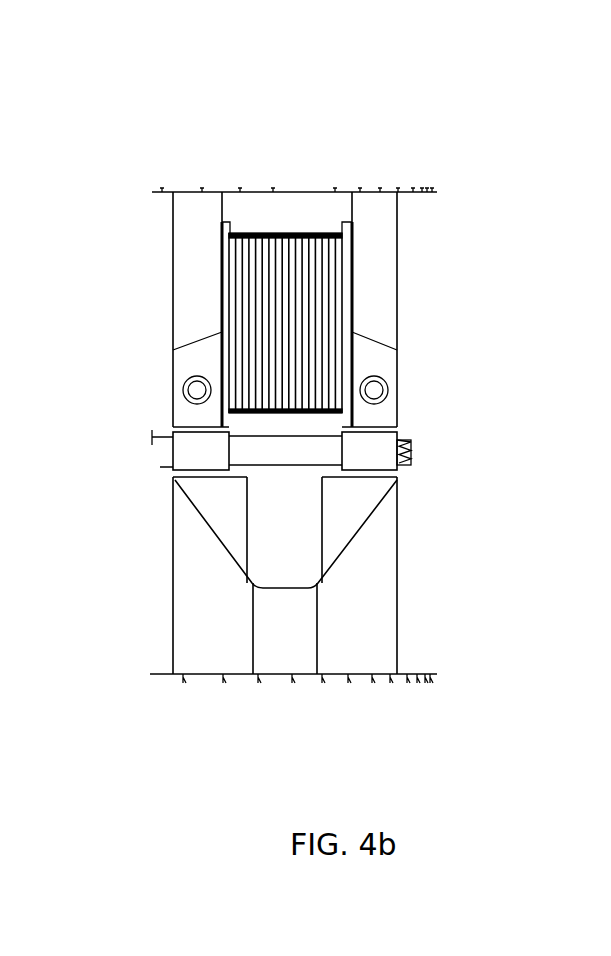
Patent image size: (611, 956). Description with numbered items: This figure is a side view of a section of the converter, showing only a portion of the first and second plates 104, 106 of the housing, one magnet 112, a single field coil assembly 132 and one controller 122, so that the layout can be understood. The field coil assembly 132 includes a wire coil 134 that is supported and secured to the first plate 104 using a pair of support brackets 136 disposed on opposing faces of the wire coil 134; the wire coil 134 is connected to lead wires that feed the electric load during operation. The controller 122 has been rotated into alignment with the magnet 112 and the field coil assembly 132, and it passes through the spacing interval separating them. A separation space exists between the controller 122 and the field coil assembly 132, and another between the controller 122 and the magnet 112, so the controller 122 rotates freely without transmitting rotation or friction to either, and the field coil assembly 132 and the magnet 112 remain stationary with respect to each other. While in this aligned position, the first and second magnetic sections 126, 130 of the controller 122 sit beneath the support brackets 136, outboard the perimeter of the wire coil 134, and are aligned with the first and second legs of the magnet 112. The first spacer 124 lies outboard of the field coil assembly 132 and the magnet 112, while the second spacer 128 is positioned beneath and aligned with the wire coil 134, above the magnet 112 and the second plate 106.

The first plate 104 is at (451, 210).
The second plate 106 is at (441, 657).
The magnet 112 is at (156, 583).
The controller 122 is at (443, 455).
The first spacer 124 is at (149, 477).
The first magnetic section 126 is at (164, 424).
The second spacer 128 is at (318, 469).
The second magnetic section 130 is at (408, 422).
The field coil assembly 132 is at (147, 217).
The wire coil 134 is at (292, 215).
The support brackets 136 is at (160, 336).